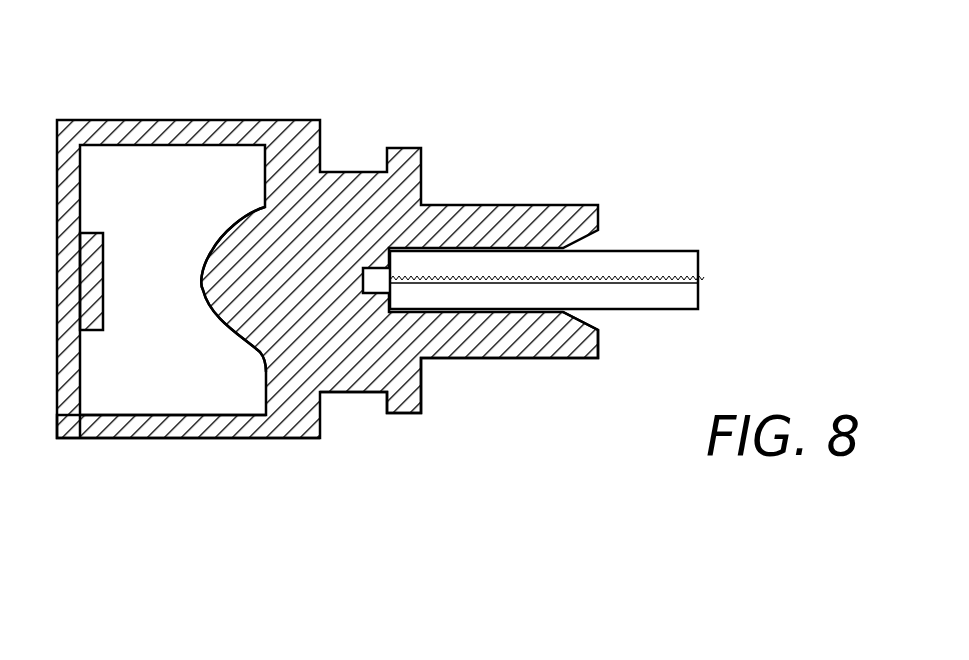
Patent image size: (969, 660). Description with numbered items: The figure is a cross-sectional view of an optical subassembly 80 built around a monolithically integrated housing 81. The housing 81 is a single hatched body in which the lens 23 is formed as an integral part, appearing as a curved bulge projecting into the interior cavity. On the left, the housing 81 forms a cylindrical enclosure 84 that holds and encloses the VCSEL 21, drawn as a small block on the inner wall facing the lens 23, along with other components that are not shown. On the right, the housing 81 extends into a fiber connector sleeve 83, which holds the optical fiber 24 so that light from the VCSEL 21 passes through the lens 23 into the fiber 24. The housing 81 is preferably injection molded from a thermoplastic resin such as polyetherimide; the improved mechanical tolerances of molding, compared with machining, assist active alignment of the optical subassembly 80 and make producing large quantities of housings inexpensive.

The optical subassembly 80 is at (350, 49).
The housing 81 is at (331, 355).
The fiber connector sleeve 83 is at (538, 358).
The cylindrical enclosure 84 is at (172, 438).
The VCSEL 21 is at (103, 298).
The lens 23 is at (217, 251).
The optical fiber 24 is at (675, 250).